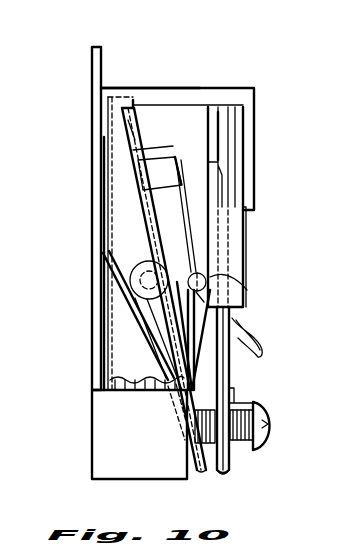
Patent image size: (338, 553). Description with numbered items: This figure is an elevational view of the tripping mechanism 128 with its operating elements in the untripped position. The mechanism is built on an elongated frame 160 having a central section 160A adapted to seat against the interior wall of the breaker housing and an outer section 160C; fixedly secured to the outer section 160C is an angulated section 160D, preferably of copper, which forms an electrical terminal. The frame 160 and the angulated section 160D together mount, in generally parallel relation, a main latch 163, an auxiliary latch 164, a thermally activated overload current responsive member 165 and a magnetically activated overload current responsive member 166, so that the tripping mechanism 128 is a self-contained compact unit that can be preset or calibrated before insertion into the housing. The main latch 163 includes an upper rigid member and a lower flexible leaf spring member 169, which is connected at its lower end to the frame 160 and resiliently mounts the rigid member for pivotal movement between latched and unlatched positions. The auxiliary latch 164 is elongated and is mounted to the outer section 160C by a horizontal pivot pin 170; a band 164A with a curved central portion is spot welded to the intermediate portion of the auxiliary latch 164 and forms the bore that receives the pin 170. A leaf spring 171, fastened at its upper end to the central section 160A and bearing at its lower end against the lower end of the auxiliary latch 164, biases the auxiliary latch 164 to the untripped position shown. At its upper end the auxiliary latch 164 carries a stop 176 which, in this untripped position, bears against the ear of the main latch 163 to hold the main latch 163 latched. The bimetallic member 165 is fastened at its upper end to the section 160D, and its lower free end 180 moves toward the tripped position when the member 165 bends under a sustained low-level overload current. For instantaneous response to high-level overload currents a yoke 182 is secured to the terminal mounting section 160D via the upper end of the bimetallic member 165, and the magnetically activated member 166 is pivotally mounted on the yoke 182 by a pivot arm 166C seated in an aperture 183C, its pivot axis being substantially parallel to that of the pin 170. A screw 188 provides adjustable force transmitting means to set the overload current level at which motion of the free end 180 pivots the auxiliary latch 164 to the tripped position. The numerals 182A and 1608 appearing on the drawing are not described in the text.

The elongated frame 160 is at (141, 87).
The central section 160A is at (92, 118).
The outer section 160C is at (185, 88).
The angulated section 160D is at (203, 117).
The tripping mechanism 128 is at (290, 53).
The stop 176 is at (133, 125).
The plunger rod 182A is at (240, 128).
The band 164A is at (130, 243).
The magnetically activated overload current responsive member 166 is at (206, 236).
The horizontal pivot pin 170 is at (137, 284).
The yoke 182 is at (257, 265).
The pivot arm 166C is at (247, 290).
The aperture 183C is at (206, 292).
The leaf spring 171 is at (143, 342).
The main latch 163 is at (96, 351).
The thermally activated overload current responsive member 165 is at (237, 376).
The leaf spring member 169 is at (112, 392).
The screw 188 is at (260, 420).
The base block 1608 is at (151, 380).
The free end 180 is at (228, 468).
The auxiliary latch 164 is at (205, 481).